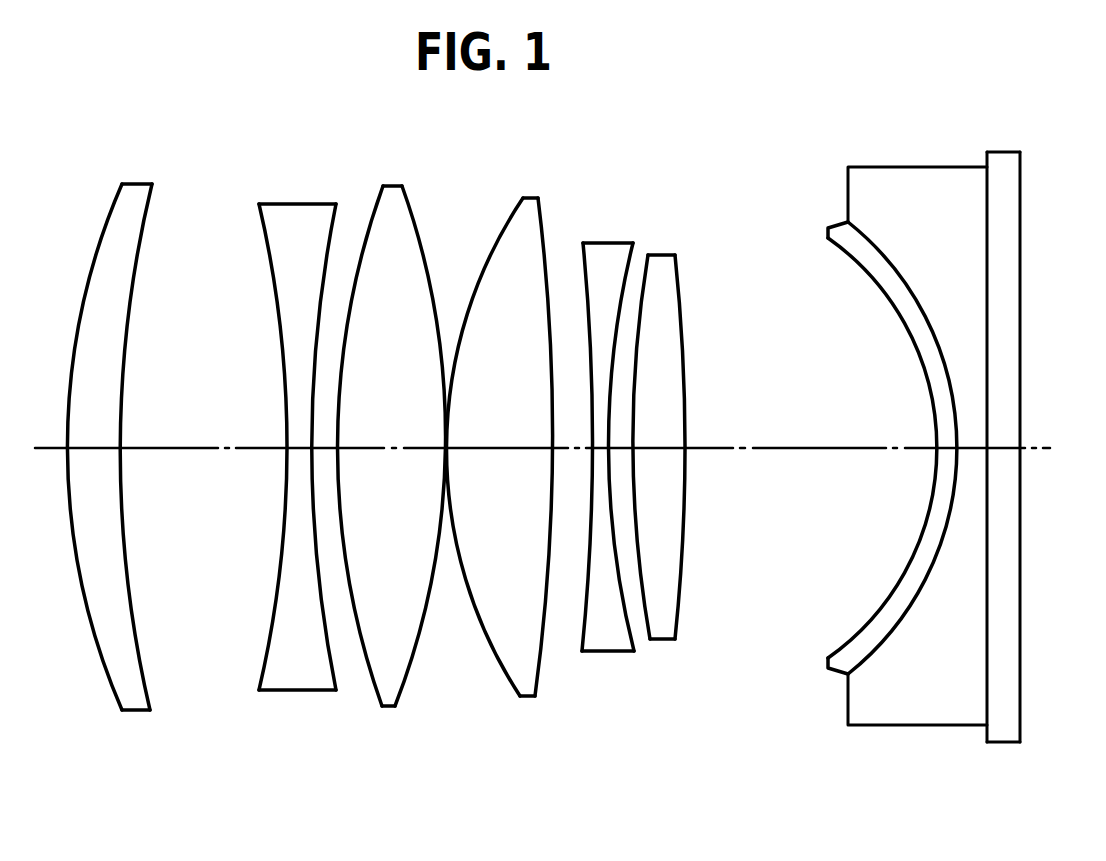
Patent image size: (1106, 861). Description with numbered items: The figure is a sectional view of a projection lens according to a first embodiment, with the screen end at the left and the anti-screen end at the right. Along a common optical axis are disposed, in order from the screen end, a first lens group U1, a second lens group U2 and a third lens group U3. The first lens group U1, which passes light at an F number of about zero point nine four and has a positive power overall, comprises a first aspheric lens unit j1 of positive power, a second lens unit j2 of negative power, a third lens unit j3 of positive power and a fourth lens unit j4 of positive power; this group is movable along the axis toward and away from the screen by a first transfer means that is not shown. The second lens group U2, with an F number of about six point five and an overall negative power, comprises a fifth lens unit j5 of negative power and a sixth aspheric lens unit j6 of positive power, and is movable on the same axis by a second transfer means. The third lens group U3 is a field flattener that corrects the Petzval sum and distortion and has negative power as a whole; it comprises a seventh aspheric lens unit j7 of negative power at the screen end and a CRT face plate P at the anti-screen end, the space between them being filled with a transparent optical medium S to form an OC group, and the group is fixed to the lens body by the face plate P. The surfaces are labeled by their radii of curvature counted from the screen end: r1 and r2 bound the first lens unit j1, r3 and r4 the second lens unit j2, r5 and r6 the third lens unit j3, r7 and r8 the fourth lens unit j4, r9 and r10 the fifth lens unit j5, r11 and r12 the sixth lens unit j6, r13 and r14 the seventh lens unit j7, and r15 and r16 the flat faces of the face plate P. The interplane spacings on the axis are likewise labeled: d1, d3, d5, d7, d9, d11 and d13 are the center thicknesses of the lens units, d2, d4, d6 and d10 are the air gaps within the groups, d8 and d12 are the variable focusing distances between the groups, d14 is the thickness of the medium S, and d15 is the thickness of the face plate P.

The radius of curvature of first lens surface r1 is at (98, 426).
The radius of curvature of second lens surface r2 is at (144, 426).
The radius of curvature of third lens surface r3 is at (268, 426).
The radius of curvature of fourth lens surface r4 is at (328, 426).
The radius of curvature of fifth lens surface r5 is at (363, 424).
The radius of curvature of sixth lens surface r6 is at (420, 424).
The radius of curvature of seventh lens surface r7 is at (485, 424).
The radius of curvature of eighth lens surface r8 is at (548, 424).
The radius of curvature of ninth lens surface r9 is at (579, 423).
The radius of curvature of tenth lens surface r10 is at (626, 423).
The radius of curvature of eleventh lens surface r11 is at (651, 426).
The radius of curvature of twelfth lens surface r12 is at (692, 439).
The radius of curvature of thirteenth lens surface r13 is at (862, 434).
The radius of curvature of fourteenth lens surface r14 is at (902, 431).
The radius of curvature of fifteenth surface r15 is at (968, 426).
The radius of curvature of sixteenth surface r16 is at (1030, 426).
The interplane spacing after first surface d1 is at (93, 469).
The interplane spacing after second surface d2 is at (203, 469).
The interplane spacing after third surface d3 is at (302, 448).
The interplane spacing after fourth surface d4 is at (328, 448).
The interplane spacing after fifth surface d5 is at (392, 465).
The interplane spacing after sixth surface d6 is at (449, 447).
The interplane spacing after seventh surface d7 is at (500, 469).
The interplane spacing after eighth surface d8 is at (573, 469).
The interplane spacing after ninth surface d9 is at (600, 448).
The interplane spacing after tenth surface d10 is at (614, 448).
The interplane spacing after eleventh surface d11 is at (659, 469).
The interplane spacing after twelfth surface d12 is at (811, 469).
The interplane spacing after thirteenth surface d13 is at (943, 452).
The interplane spacing after fourteenth surface d14 is at (975, 448).
The interplane spacing after fifteenth surface d15 is at (1010, 452).
The first aspheric lens unit j1 is at (122, 684).
The second lens unit j2 is at (292, 673).
The third lens unit j3 is at (387, 687).
The fourth lens unit j4 is at (520, 668).
The fifth lens unit j5 is at (610, 637).
The sixth aspheric lens unit j6 is at (658, 628).
The seventh aspheric lens unit j7 is at (842, 662).
The transparent optical medium S is at (917, 466).
The CRT face plate P is at (998, 443).
The first lens group U1 is at (553, 788).
The second lens group U2 is at (693, 788).
The third lens group U3 is at (1003, 788).